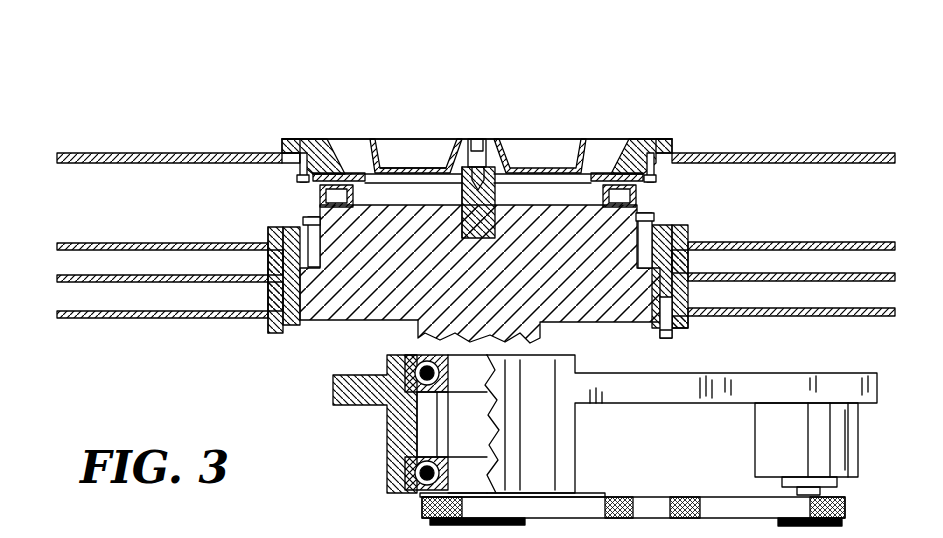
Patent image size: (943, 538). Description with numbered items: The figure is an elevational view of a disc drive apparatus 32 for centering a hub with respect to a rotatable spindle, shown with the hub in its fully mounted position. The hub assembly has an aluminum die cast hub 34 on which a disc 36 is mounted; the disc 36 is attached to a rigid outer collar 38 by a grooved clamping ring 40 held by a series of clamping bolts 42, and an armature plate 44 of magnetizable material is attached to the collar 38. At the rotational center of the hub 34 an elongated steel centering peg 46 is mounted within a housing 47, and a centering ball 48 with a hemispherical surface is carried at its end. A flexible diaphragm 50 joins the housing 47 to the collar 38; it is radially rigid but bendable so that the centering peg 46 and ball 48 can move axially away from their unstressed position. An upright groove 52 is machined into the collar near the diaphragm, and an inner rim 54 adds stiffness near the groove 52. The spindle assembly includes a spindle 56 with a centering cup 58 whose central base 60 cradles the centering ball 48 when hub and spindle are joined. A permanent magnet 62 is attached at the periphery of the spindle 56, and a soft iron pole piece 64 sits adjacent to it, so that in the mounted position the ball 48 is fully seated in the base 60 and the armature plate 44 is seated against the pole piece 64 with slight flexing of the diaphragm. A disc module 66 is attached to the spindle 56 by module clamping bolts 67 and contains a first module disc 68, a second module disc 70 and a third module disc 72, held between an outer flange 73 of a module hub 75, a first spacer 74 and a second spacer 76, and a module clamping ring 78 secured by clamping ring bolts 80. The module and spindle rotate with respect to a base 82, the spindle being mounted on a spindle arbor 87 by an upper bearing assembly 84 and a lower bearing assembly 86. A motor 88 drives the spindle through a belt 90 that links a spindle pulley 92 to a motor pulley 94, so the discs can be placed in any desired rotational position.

The disc drive apparatus 32 is at (236, 86).
The hub 34 is at (440, 139).
The disc 36 is at (170, 153).
The collar 38 is at (300, 139).
The clamping ring 40 is at (283, 165).
The clamping bolts 42 is at (300, 180).
The armature plate 44 is at (656, 182).
The centering peg 46 is at (480, 139).
The housing 47 is at (490, 150).
The centering ball 48 is at (455, 165).
The diaphragm 50 is at (390, 160).
The groove 52 is at (592, 170).
The inner rim 54 is at (372, 140).
The spindle 56 is at (330, 322).
The centering cup 58 is at (462, 175).
The base 60 is at (495, 183).
The permanent magnet 62 is at (603, 195).
The pole piece 64 is at (320, 195).
The disc module 66 is at (176, 346).
The module clamping bolts 67 is at (650, 215).
The first module disc 68 is at (110, 243).
The second module disc 70 is at (60, 275).
The third module disc 72 is at (60, 311).
The outer flange 73 is at (268, 228).
The first spacer 74 is at (268, 262).
The module hub 75 is at (688, 295).
The second spacer 76 is at (268, 297).
The module clamping ring 78 is at (688, 325).
The clamping ring bolts 80 is at (665, 332).
The base 82 is at (680, 403).
The upper bearing assembly 84 is at (412, 358).
The lower bearing assembly 86 is at (412, 472).
The spindle arbor 87 is at (392, 425).
The motor 88 is at (858, 440).
The belt 90 is at (675, 497).
The spindle pulley 92 is at (430, 521).
The motor pulley 94 is at (842, 520).